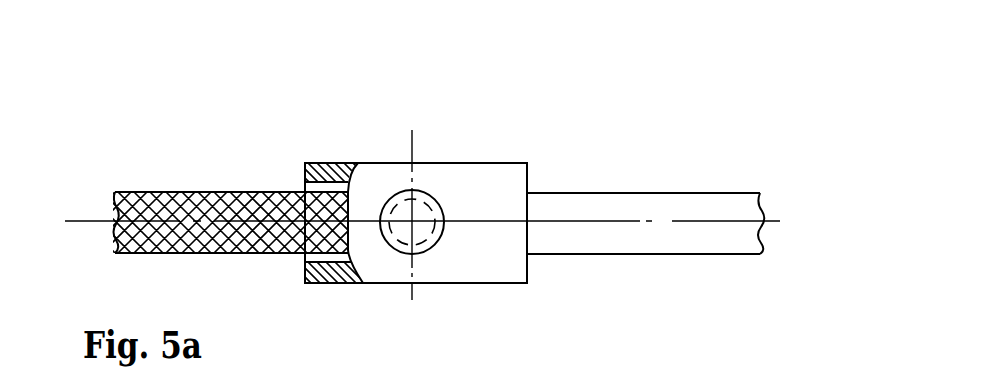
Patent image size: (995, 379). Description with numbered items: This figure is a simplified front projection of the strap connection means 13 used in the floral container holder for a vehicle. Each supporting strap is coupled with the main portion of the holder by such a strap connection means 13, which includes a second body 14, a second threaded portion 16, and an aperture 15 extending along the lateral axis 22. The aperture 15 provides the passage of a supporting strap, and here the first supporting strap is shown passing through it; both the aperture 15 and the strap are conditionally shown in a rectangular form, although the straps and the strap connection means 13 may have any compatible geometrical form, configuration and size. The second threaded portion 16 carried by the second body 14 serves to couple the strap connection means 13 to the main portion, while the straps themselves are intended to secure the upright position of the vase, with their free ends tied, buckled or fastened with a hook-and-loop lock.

The strap connection means 13 is at (508, 100).
The second body 14 is at (477, 263).
The aperture 15 is at (330, 185).
The second threaded portion 16 is at (437, 212).
The lateral axis 22 is at (608, 224).